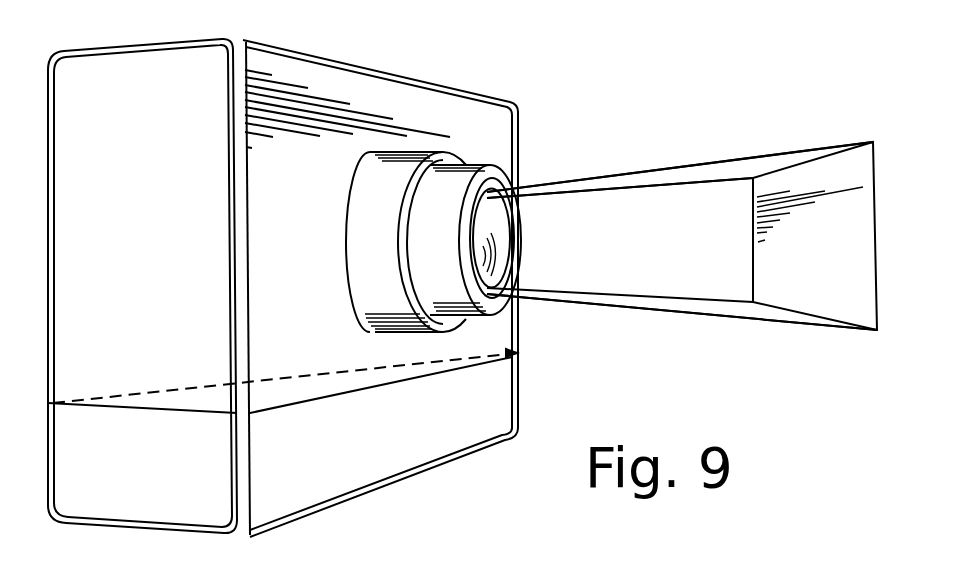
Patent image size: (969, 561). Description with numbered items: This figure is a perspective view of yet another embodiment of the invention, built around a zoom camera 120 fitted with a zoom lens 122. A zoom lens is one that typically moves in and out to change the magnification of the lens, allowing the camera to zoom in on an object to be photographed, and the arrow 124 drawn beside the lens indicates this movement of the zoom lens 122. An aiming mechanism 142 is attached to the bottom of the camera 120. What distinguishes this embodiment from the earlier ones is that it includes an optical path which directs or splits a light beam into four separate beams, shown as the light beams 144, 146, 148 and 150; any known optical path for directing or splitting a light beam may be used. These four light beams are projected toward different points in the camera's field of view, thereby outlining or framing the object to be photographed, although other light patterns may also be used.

The zoom camera 120 is at (457, 80).
The zoom lens 122 is at (467, 158).
The arrow 124 is at (398, 244).
The aiming mechanism 142 is at (415, 442).
The light beam 144 is at (718, 300).
The light beam 146 is at (748, 318).
The light beam 148 is at (695, 180).
The light beam 150 is at (717, 160).